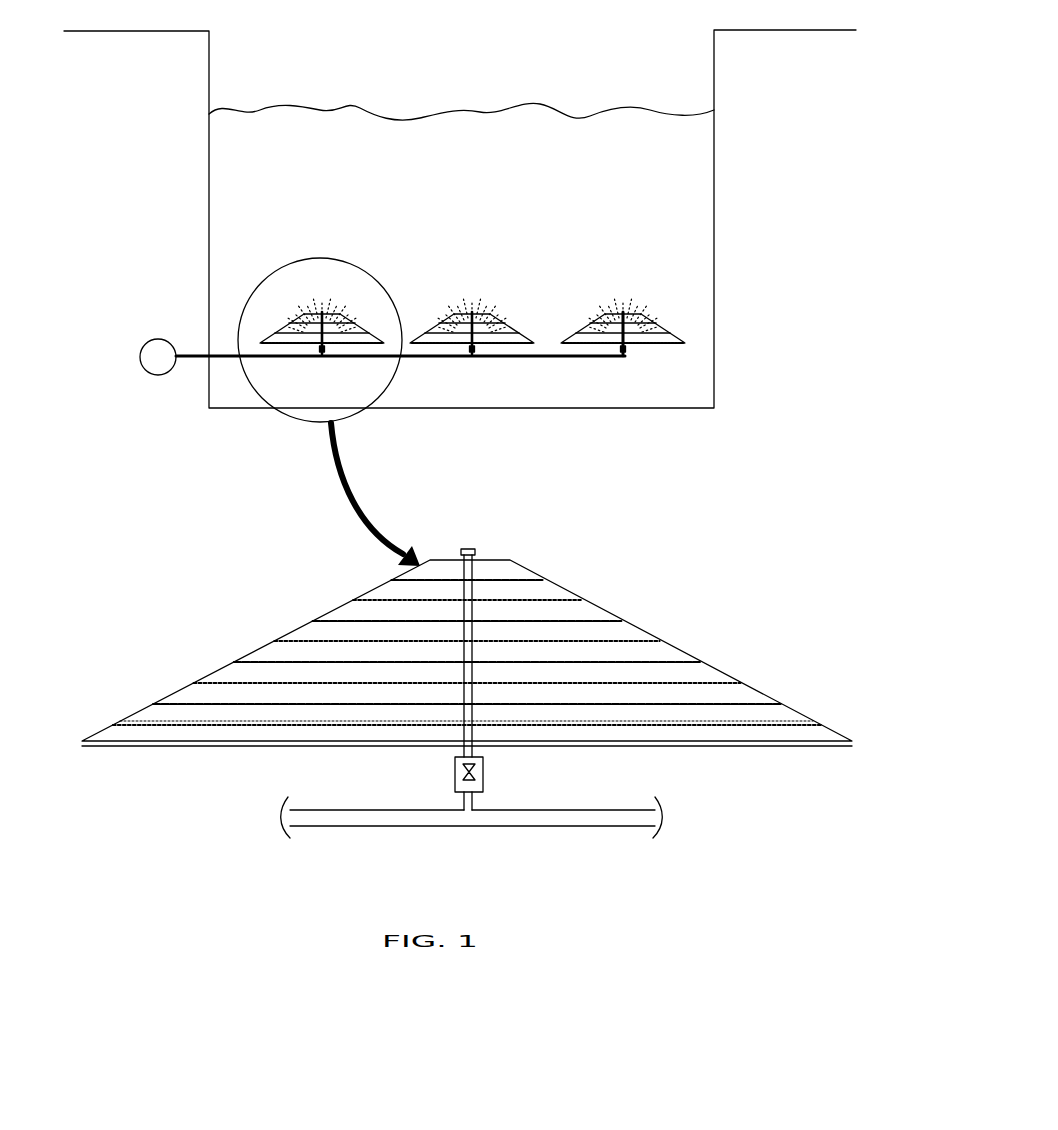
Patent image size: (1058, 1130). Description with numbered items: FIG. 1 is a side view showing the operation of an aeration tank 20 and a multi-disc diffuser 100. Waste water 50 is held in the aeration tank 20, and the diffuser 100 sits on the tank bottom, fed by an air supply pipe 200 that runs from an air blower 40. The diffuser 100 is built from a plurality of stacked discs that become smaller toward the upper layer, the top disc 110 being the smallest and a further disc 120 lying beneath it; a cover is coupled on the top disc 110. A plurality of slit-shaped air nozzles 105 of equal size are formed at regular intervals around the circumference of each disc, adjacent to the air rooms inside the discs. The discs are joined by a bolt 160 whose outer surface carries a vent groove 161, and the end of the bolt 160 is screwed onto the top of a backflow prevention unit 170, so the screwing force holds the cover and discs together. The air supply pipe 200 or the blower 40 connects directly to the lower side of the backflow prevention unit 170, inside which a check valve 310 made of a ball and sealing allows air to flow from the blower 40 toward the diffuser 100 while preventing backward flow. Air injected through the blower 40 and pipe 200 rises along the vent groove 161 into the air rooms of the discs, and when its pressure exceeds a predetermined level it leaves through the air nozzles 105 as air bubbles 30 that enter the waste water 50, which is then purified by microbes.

The aeration tank 20 is at (714, 66).
The air bubble 30 is at (660, 293).
The air blower 40 is at (158, 339).
The waste water 50 is at (478, 131).
The multi-disc diffuser 100 is at (688, 348).
The air nozzle 105 is at (700, 658).
The top disc 110 is at (561, 583).
The disc 120 is at (601, 607).
The bolt 160 is at (477, 553).
The vent groove 161 is at (473, 570).
The backflow prevention unit 170 is at (627, 351).
The air supply pipe 200 is at (608, 358).
The check valve 310 is at (472, 764).